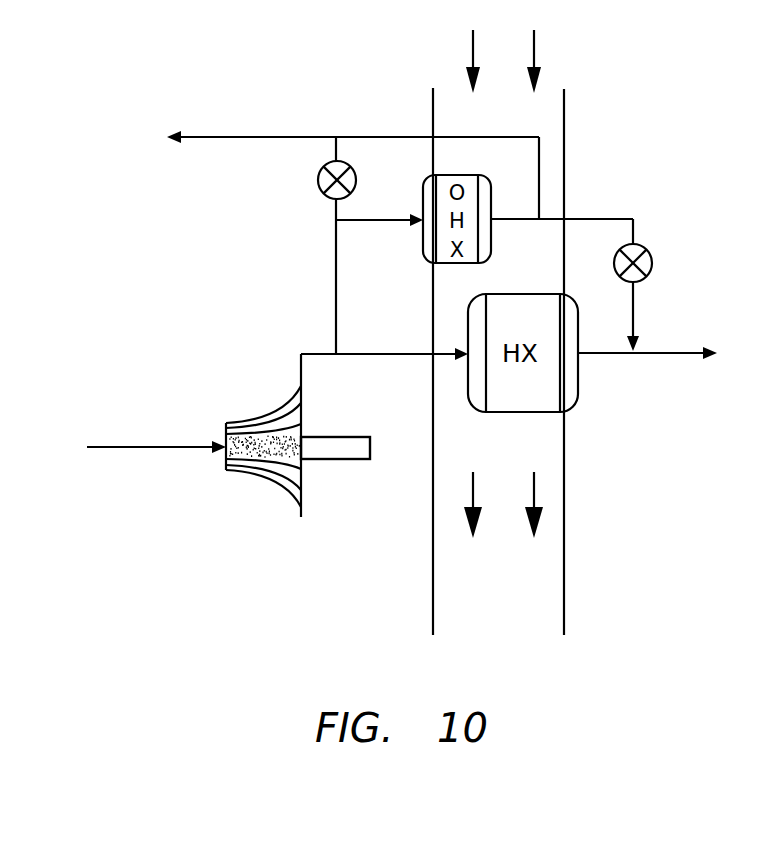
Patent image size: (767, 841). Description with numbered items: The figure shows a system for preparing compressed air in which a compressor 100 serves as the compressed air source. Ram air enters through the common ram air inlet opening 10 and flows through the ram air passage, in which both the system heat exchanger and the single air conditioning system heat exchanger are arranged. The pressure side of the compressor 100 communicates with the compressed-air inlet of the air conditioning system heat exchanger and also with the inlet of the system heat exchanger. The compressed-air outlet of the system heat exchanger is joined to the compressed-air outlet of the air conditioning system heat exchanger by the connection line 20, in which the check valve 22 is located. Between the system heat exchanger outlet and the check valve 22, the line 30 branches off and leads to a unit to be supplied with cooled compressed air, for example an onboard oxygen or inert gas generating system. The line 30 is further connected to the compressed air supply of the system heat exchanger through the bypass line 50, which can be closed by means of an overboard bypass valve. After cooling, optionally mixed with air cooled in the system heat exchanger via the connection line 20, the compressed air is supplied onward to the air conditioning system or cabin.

The ram air inlet opening 10 is at (546, 98).
The connection line 20 is at (596, 217).
The check valve 22 is at (653, 258).
The line 30 is at (259, 135).
The bypass line 50 is at (338, 147).
The compressor 100 is at (265, 416).